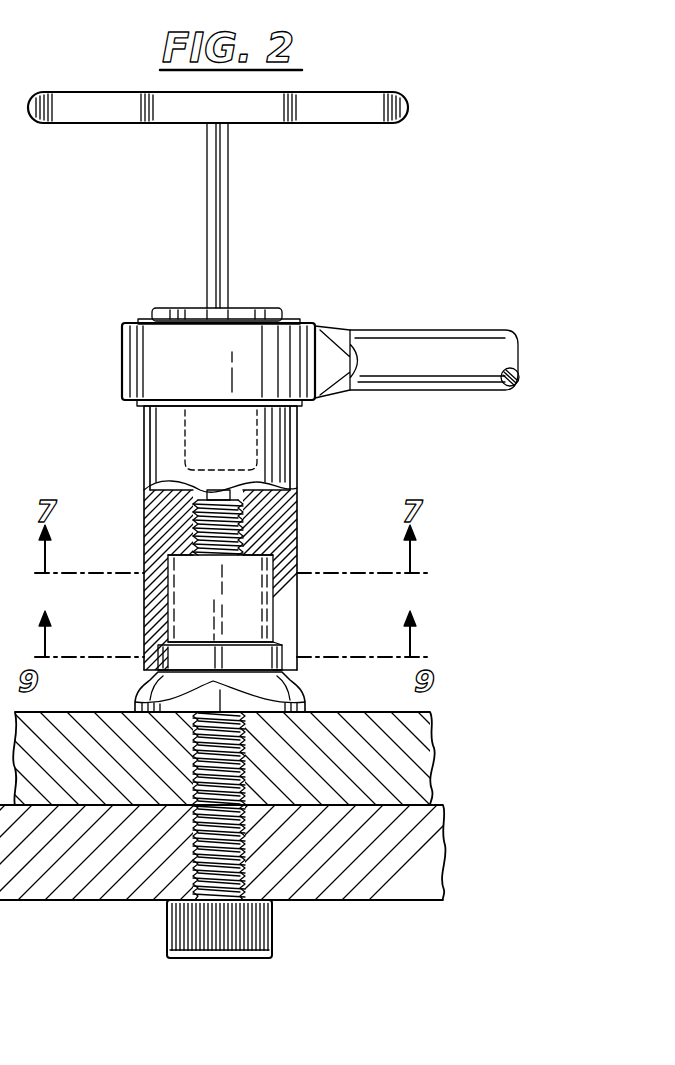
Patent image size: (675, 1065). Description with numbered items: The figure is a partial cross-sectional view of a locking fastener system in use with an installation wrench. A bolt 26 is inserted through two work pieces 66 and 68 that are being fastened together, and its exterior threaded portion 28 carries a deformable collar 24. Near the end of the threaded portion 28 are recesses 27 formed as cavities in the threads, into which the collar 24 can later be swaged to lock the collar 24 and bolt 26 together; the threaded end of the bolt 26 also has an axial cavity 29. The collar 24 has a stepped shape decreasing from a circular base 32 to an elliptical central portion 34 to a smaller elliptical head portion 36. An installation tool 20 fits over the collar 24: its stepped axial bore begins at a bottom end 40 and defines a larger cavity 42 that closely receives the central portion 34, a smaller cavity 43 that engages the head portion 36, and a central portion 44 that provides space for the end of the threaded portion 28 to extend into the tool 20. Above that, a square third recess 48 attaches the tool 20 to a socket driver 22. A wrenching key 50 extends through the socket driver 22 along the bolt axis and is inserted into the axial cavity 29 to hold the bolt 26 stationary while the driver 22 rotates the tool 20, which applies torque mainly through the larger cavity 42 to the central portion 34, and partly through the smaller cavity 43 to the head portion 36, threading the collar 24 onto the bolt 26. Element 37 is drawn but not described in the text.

The installation tool 20 is at (135, 448).
The socket driver 22 is at (372, 348).
The collar 24 is at (310, 700).
The bolt 26 is at (276, 929).
The recesses 27 is at (250, 532).
The threaded portion 28 is at (195, 525).
The axial cavity 29 is at (210, 490).
The base 32 is at (142, 696).
The central portion 34 is at (165, 652).
The head portion 36 is at (190, 604).
The shoulder 37 is at (175, 548).
The bottom end 40 is at (293, 670).
The larger cavity 42 is at (292, 652).
The smaller cavity 43 is at (295, 598).
The central portion of the bore 44 is at (258, 522).
The third recess 48 is at (258, 437).
The wrenching key 50 is at (222, 221).
The work piece 66 is at (425, 754).
The work piece 68 is at (428, 829).